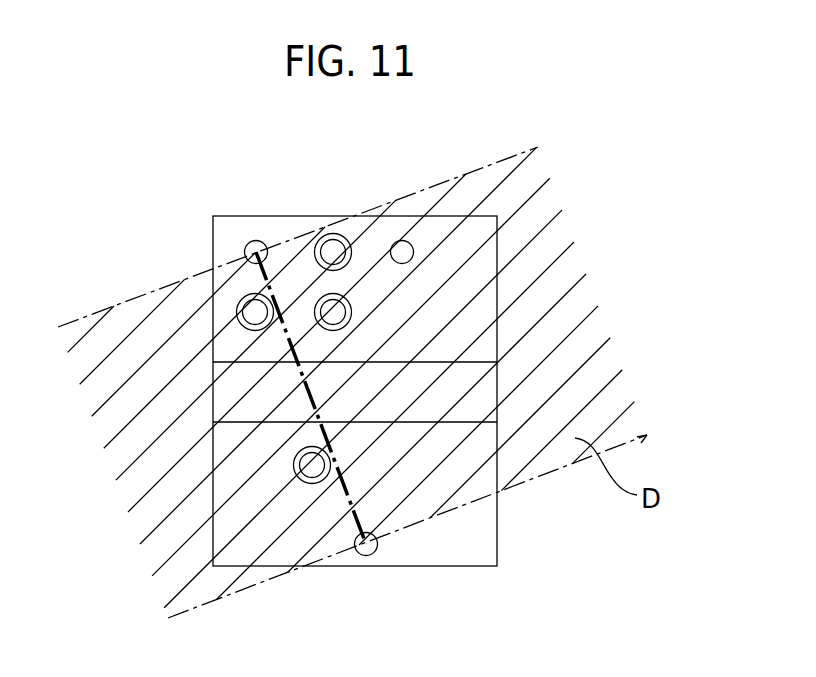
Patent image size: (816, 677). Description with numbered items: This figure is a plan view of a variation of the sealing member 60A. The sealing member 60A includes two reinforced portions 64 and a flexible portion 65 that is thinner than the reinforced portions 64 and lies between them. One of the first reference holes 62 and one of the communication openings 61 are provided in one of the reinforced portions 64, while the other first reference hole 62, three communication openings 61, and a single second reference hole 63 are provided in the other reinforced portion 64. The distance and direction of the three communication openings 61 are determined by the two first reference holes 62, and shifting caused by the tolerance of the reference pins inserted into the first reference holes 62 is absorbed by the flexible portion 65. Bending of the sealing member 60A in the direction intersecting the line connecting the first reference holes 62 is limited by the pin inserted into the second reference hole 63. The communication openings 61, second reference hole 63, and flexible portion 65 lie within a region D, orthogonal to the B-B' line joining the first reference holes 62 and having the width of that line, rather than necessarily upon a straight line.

The sealing member 60A is at (490, 142).
The communication openings 61 is at (333, 252).
The first reference holes 62 is at (256, 252).
The second reference hole 63 is at (406, 250).
The reinforced portions 64 is at (488, 253).
The flexible portion 65 is at (492, 383).